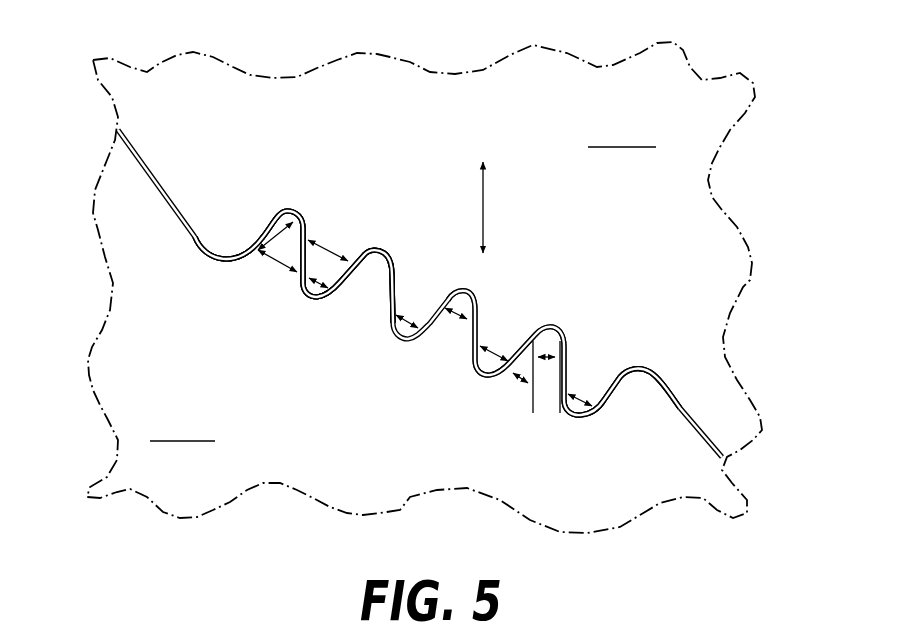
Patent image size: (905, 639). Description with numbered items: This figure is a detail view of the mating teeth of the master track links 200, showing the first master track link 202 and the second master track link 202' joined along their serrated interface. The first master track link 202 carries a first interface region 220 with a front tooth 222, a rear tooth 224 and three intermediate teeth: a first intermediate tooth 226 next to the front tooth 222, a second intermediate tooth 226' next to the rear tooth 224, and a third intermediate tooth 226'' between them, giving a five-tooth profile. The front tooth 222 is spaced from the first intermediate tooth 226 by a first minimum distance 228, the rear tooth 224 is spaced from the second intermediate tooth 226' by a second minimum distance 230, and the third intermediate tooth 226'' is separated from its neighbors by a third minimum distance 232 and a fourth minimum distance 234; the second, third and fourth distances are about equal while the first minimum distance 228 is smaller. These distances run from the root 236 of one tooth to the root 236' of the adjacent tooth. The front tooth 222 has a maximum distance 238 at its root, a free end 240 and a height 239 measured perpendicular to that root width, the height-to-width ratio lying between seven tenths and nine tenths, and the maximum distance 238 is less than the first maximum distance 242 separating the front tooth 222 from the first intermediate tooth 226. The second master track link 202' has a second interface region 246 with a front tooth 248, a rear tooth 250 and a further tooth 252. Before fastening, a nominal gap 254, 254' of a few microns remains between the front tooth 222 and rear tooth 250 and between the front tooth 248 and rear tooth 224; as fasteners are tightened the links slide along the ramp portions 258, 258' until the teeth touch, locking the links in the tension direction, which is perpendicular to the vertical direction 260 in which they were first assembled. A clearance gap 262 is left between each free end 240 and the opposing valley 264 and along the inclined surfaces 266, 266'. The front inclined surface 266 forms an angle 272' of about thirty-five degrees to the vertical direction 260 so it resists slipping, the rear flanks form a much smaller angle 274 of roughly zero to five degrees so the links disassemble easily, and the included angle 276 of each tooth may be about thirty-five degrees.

The fastening system 200 is at (548, 68).
The first master track link 202 is at (182, 430).
The second master track link 202' is at (622, 136).
The first interface region 220 is at (197, 261).
The front tooth 222 is at (282, 250).
The rear tooth 224 is at (648, 402).
The first intermediate tooth 226 is at (335, 347).
The second intermediate tooth 226' is at (550, 401).
The third intermediate tooth 226'' is at (478, 384).
The first minimum distance 228 is at (313, 293).
The second minimum distance 230 is at (603, 382).
The third minimum distance 232 is at (408, 316).
The fourth minimum distance 234 is at (498, 345).
The root 236 is at (380, 306).
The inner region (prime) 236' is at (452, 278).
The maximum distance 238 is at (276, 250).
The height 239 is at (300, 232).
The free end 240 is at (286, 222).
The first maximum distance 242 is at (328, 262).
The second interface region 246 is at (676, 380).
The front tooth of second master track link 248 is at (613, 378).
The rear tooth of second master track link 250 is at (232, 237).
The tooth 252 is at (512, 338).
The nominal gap 254 is at (261, 200).
The nominal gap 254' is at (592, 439).
The ramp portion 258 is at (156, 178).
The straight segment (prime) 258' is at (711, 422).
The vertical direction 260 is at (487, 200).
The clearance gap 262 is at (384, 256).
The valley 264 is at (368, 262).
The front inclined surface 266 is at (356, 317).
The wall (prime) 266' is at (418, 251).
The dimension 272' is at (505, 390).
The angle 274 is at (571, 352).
The included angle 276 is at (468, 293).